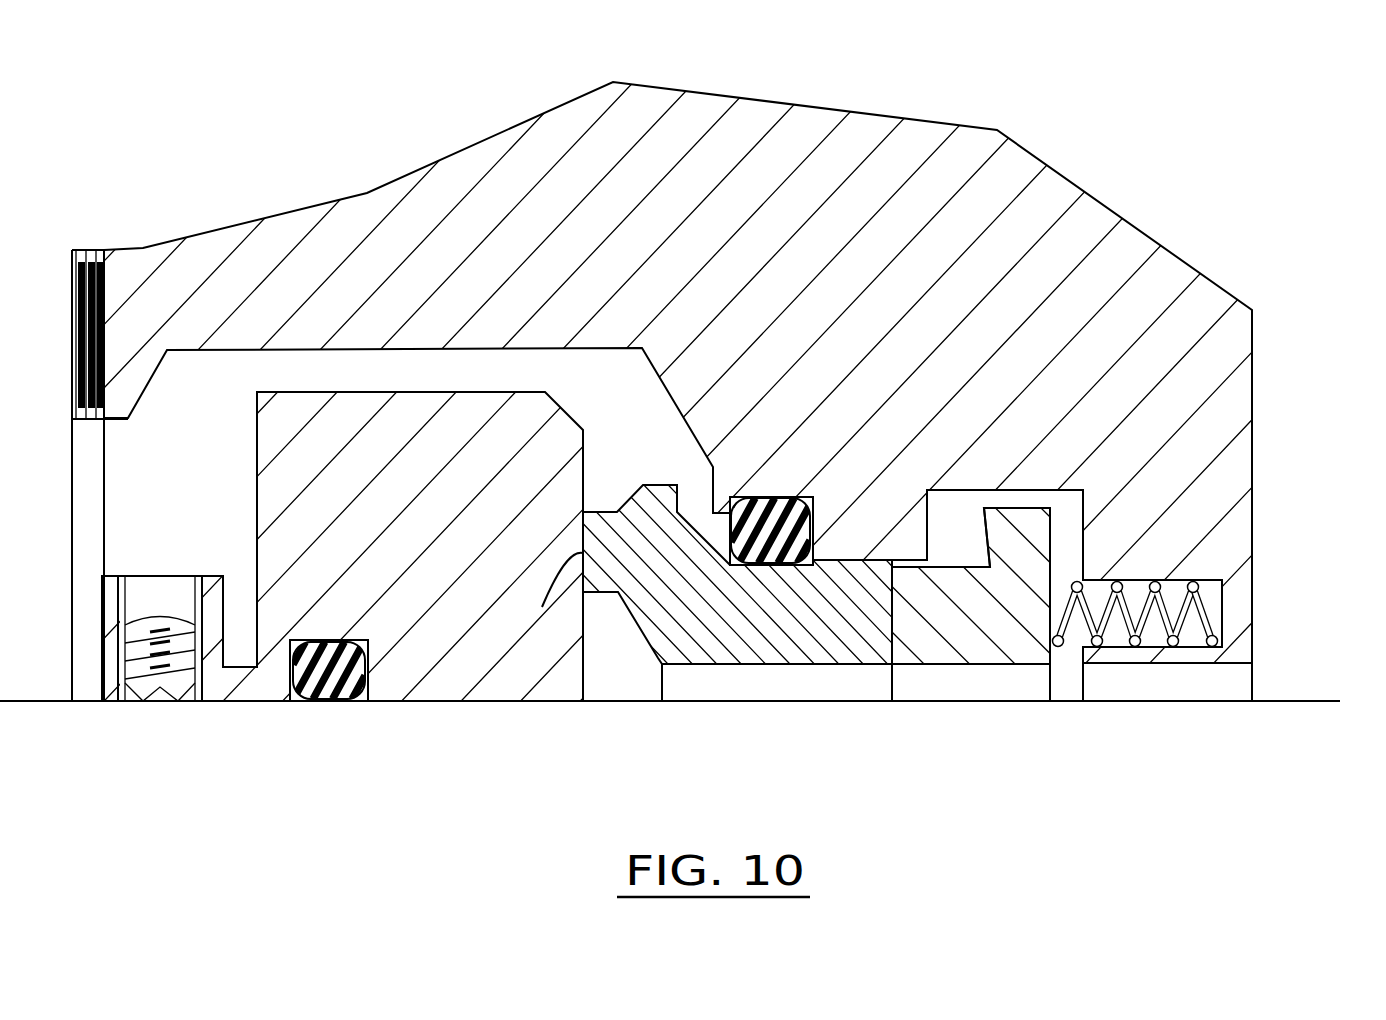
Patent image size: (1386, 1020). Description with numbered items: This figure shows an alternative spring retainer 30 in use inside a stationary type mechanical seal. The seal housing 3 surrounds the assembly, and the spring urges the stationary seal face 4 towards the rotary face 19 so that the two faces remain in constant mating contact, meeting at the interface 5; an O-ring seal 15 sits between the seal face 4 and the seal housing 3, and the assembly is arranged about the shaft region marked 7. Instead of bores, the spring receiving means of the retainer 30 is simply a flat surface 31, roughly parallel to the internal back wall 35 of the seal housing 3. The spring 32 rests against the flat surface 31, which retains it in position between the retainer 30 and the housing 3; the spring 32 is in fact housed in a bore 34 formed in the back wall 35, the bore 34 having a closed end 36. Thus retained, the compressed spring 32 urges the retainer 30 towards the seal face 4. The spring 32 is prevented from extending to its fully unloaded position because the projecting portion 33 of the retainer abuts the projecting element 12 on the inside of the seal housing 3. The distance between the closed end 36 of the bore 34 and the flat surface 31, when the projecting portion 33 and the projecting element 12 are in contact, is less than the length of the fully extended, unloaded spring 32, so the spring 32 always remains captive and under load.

The seal housing 3 is at (1043, 217).
The seal face 4 is at (655, 540).
The interface 5 is at (542, 607).
The shaft 7 is at (567, 791).
The projecting element 12 is at (925, 537).
The O-ring seal 15 is at (785, 550).
The rotary face 19 is at (445, 672).
The spring retainer 30 is at (990, 610).
The flat surface 31 is at (1047, 548).
The spring 32 is at (1145, 704).
The projecting portion 33 is at (1010, 533).
The bore 34 is at (1192, 632).
The back wall 35 is at (1086, 524).
The closed end 36 is at (1224, 606).